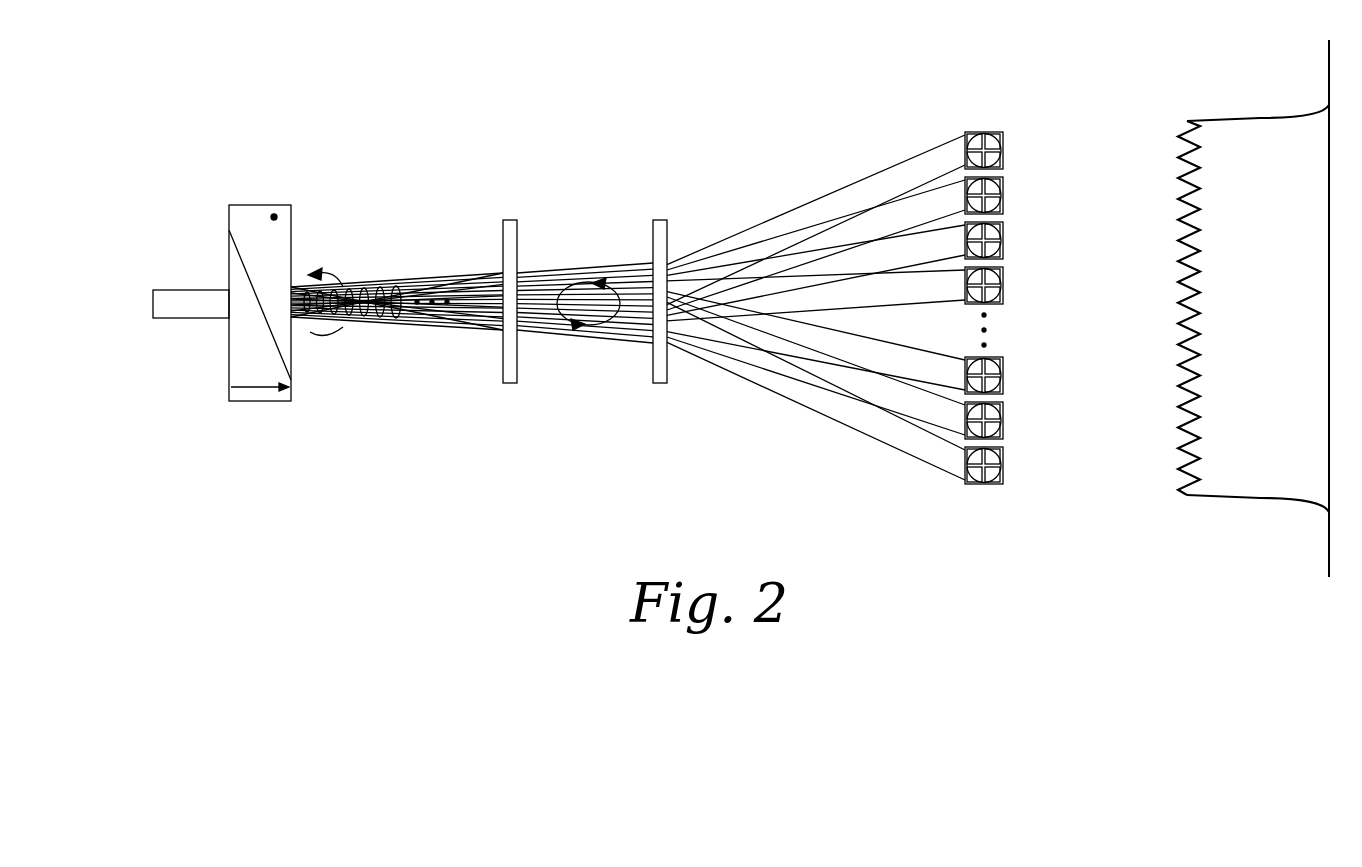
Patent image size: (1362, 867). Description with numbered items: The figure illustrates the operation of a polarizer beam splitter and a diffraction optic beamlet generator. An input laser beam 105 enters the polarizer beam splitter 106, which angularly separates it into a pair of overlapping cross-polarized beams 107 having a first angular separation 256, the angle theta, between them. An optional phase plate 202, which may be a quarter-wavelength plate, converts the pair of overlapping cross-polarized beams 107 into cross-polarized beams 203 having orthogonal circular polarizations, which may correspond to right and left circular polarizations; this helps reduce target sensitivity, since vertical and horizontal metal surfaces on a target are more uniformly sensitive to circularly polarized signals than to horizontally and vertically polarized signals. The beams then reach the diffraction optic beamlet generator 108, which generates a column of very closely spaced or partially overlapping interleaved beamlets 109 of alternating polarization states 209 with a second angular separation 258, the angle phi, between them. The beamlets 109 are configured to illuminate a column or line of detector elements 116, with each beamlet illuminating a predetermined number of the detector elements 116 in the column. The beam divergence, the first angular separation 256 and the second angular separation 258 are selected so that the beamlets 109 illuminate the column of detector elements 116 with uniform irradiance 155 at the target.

The input laser beam 105 is at (178, 290).
The polarizer beam splitter 106 is at (258, 205).
The pair of overlapping cross-polarized beams 107 is at (457, 338).
The diffraction optic beamlet generator 108 is at (660, 220).
The beamlets 109 is at (721, 210).
The detector elements 116 is at (965, 168).
The uniform irradiance 155 is at (1168, 438).
The phase plate 202 is at (505, 220).
The cross-polarized beams having orthogonal circular polarizations 203 is at (615, 348).
The alternating polarization states 209 is at (971, 340).
The first angular separation 256 is at (325, 368).
The second angular separation 258 is at (789, 384).